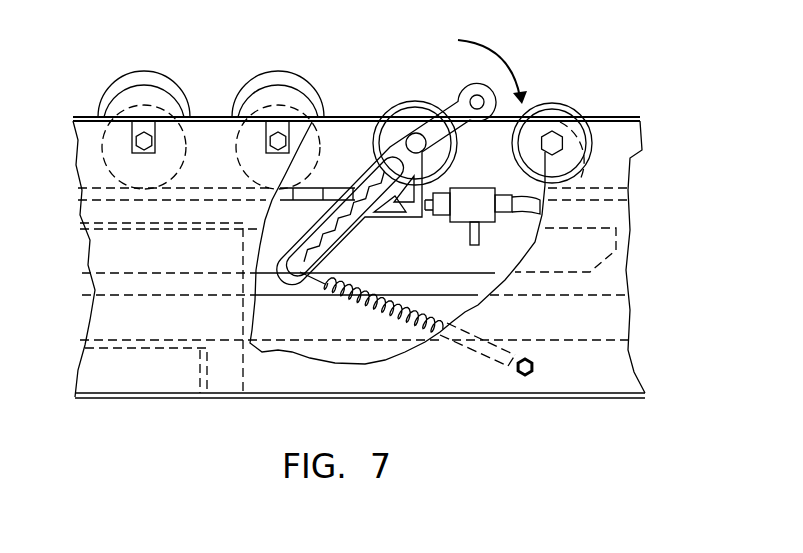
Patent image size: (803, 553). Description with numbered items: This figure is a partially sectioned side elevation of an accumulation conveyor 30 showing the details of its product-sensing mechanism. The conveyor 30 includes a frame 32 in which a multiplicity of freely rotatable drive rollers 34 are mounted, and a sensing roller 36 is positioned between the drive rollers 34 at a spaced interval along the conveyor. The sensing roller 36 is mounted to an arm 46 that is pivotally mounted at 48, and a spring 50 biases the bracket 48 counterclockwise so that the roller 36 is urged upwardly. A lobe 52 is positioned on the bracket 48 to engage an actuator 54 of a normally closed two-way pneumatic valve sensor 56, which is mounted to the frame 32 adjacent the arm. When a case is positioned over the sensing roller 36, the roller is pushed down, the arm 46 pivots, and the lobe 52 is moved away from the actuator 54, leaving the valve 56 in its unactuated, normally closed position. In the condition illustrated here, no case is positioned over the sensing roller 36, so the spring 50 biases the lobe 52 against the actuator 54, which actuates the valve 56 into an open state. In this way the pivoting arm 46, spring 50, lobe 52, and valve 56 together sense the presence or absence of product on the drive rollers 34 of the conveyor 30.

The accumulation conveyor 30 is at (93, 112).
The frame 32 is at (632, 168).
The drive rollers 34 is at (270, 100).
The sensing roller 36 is at (466, 84).
The arm 46 is at (366, 175).
The pivot mount 48 is at (408, 133).
The spring 50 is at (345, 310).
The lobe 52 is at (402, 225).
The actuator 54 is at (430, 212).
The pneumatic valve sensor 56 is at (468, 188).